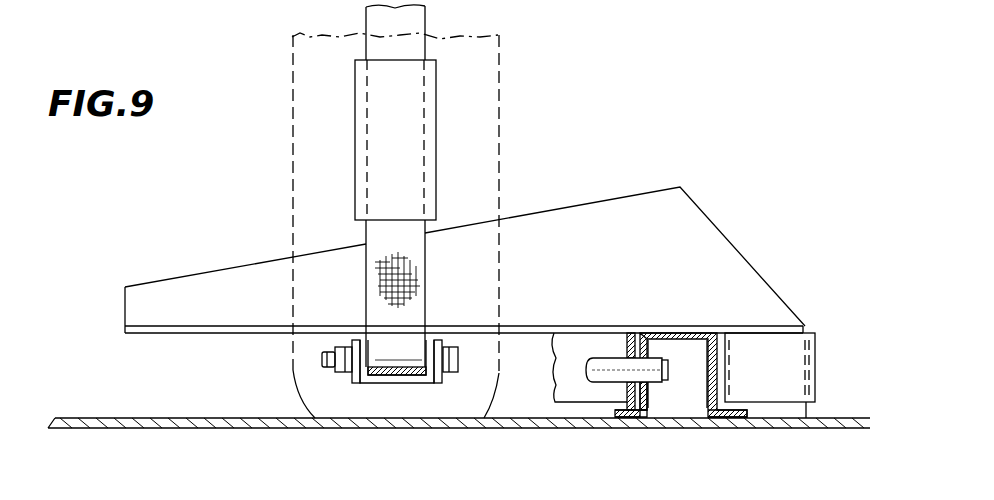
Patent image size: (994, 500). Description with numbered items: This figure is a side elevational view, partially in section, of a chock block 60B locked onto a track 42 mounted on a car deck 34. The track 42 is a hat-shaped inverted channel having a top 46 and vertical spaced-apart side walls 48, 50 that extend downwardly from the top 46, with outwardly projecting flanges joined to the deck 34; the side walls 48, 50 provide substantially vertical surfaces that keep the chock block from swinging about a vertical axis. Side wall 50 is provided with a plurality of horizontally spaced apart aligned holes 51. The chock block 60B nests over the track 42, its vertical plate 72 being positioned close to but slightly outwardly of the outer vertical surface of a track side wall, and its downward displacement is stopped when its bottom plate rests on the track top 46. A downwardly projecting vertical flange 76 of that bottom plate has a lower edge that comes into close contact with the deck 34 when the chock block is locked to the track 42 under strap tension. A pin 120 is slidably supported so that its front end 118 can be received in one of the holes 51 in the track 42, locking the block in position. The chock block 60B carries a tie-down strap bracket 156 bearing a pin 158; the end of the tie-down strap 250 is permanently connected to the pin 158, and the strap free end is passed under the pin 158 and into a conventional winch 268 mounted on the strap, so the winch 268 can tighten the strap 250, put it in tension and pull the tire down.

The tie-down strap 250 is at (432, 19).
The winch 268 is at (378, 133).
The chock block 60B is at (591, 186).
The top 46 is at (660, 328).
The track 42 is at (688, 324).
The vertical plate 72 is at (627, 340).
The holes 51 is at (650, 350).
The front end of pin 118 is at (659, 384).
The pin 120 is at (598, 384).
The side wall 50 is at (650, 417).
The side wall 48 is at (703, 412).
The vertical flange 76 is at (815, 408).
The car deck 34 is at (267, 428).
The tie-down strap bracket 156 is at (358, 385).
The pin 158 is at (433, 385).